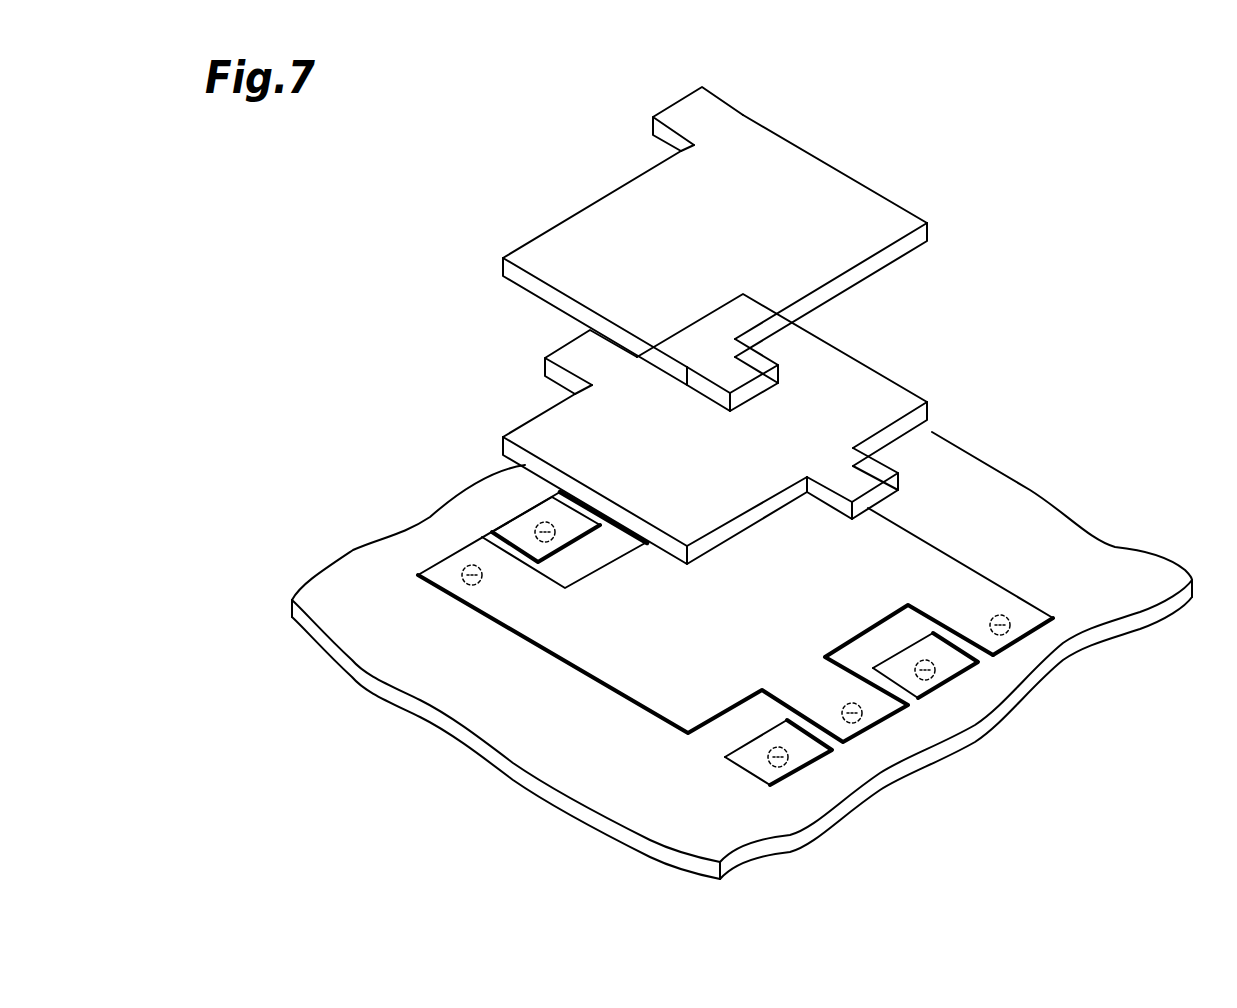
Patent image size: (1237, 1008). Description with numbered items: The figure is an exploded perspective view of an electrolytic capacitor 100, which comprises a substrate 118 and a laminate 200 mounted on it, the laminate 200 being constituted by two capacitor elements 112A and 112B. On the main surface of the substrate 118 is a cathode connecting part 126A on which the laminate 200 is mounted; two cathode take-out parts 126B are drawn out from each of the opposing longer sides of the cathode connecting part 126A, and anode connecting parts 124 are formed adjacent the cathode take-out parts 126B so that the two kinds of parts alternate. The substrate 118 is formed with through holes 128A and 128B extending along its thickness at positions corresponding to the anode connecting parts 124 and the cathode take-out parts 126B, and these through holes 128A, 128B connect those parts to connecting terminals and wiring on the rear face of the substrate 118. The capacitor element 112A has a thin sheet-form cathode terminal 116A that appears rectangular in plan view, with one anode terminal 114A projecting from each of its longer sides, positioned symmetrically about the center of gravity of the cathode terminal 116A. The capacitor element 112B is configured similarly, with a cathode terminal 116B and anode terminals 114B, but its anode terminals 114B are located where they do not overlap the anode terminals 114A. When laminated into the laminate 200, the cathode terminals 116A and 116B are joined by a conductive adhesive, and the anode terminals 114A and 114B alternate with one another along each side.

The electrolytic capacitor 100 is at (333, 258).
The laminate 200 is at (1152, 217).
The capacitor element 112A is at (967, 375).
The capacitor element 112B is at (945, 233).
The anode terminals 114A is at (578, 352).
The anode terminals 114B is at (712, 112).
The cathode terminal 116A is at (875, 383).
The cathode terminal 116B is at (845, 190).
The substrate 118 is at (1110, 552).
The anode connecting parts 124 is at (515, 528).
The cathode connecting part 126A is at (617, 658).
The cathode take-out parts 126B is at (440, 577).
The through holes 128A is at (543, 522).
The through holes 128B is at (470, 565).